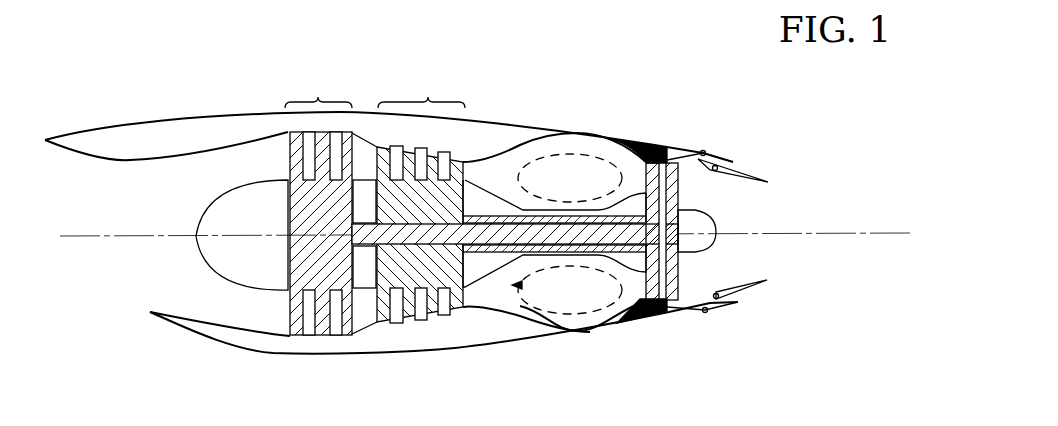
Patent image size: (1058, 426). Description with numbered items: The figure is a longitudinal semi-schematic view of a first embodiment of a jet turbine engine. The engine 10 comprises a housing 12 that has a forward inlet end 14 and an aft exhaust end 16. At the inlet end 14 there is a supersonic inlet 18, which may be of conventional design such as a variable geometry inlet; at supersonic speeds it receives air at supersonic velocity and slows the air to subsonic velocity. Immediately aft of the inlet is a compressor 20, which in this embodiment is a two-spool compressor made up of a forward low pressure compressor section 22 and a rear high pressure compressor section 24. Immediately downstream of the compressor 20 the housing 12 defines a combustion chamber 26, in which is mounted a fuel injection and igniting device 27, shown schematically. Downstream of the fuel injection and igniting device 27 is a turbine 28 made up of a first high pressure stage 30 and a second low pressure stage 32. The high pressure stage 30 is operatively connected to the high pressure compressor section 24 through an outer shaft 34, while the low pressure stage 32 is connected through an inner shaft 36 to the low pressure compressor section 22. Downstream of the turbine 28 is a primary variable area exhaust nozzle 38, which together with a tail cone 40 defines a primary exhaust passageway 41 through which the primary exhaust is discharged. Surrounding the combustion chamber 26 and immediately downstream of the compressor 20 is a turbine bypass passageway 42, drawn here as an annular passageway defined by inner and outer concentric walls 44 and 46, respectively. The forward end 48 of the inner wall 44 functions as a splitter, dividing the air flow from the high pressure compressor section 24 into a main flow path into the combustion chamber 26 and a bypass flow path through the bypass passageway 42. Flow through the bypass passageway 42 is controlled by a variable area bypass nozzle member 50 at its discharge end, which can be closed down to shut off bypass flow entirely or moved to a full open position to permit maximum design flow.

The engine 10 is at (480, 50).
The housing 12 is at (238, 108).
The forward inlet end 14 is at (158, 112).
The aft exhaust end 16 is at (770, 201).
The supersonic inlet 18 is at (88, 183).
The compressor 20 is at (363, 98).
The low pressure compressor section 22 is at (333, 196).
The high pressure compressor section 24 is at (420, 190).
The combustion chamber 26 is at (570, 155).
The fuel injection and igniting device 27 is at (514, 184).
The turbine 28 is at (657, 123).
The first high pressure stage 30 is at (613, 315).
The second low pressure stage 32 is at (678, 285).
The outer shaft 34 is at (492, 253).
The inner shaft 36 is at (478, 248).
The primary variable area exhaust nozzle 38 is at (750, 176).
The tail cone 40 is at (708, 244).
The primary exhaust passageway 41 is at (725, 203).
The turbine bypass passageway 42 is at (545, 160).
The inner wall 44 is at (586, 140).
The outer wall 46 is at (562, 180).
The forward end 48 is at (520, 307).
The variable area bypass nozzle member 50 is at (710, 150).